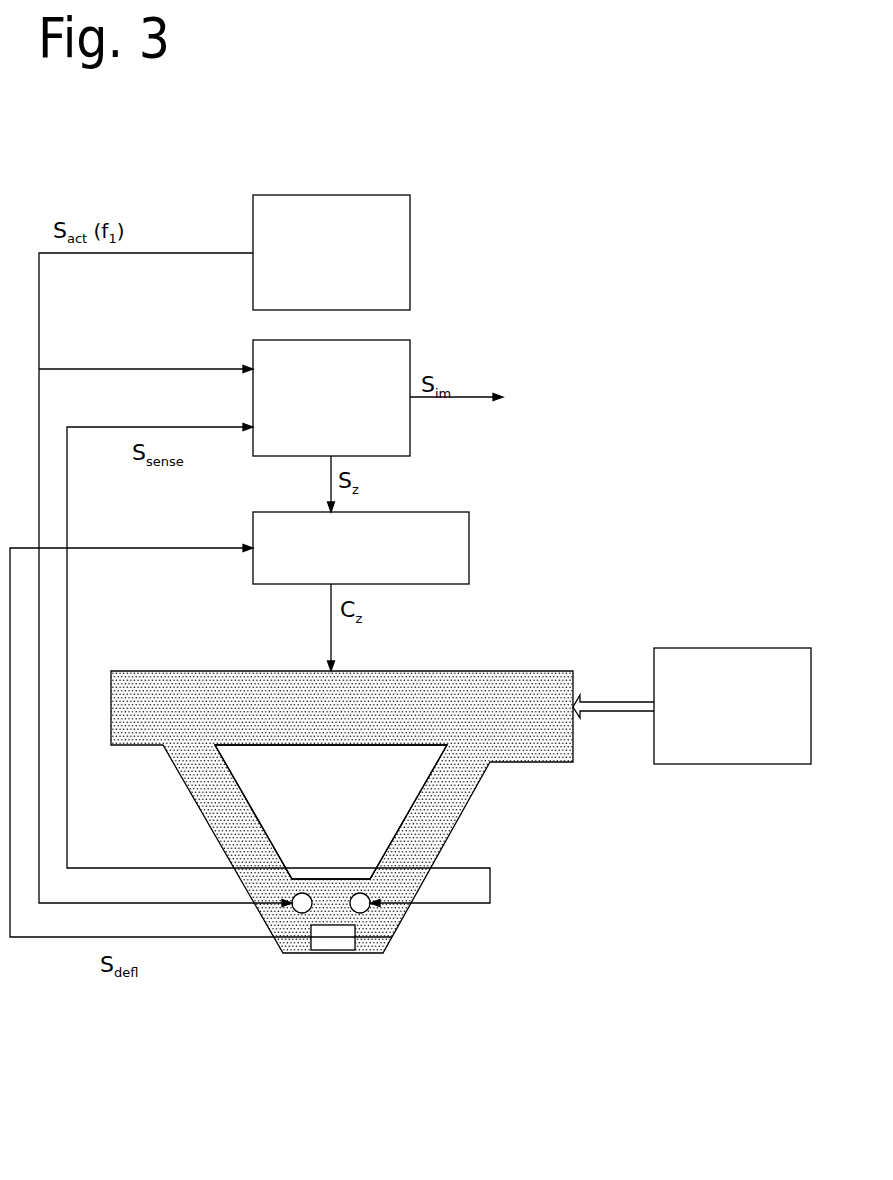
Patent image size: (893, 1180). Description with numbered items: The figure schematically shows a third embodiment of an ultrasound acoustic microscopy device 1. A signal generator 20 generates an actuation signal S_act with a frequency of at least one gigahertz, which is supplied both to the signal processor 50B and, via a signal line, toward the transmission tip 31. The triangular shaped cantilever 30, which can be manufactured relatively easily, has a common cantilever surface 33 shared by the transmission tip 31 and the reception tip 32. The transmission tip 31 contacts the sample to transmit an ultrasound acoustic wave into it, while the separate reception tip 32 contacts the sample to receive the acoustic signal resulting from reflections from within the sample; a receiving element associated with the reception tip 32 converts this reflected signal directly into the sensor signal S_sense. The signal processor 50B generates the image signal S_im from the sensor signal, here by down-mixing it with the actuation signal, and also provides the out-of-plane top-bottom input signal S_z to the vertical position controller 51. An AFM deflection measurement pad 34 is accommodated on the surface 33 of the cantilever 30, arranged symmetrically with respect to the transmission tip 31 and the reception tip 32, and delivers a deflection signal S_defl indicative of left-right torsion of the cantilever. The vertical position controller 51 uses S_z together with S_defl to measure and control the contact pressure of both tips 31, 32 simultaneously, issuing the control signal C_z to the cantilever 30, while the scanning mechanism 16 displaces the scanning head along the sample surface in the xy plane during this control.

The ultrasound acoustic microscopy device 1 is at (586, 898).
The scanning mechanism 16 is at (743, 751).
The signal generator 20 is at (322, 293).
The cantilever 30 is at (345, 711).
The transmission tip 31 is at (303, 906).
The reception tip 32 is at (359, 905).
The common cantilever surface 33 is at (411, 845).
The AFM deflection measurement pad 34 is at (333, 938).
The signal processor 50B is at (315, 438).
The vertical position controller 51 is at (433, 576).